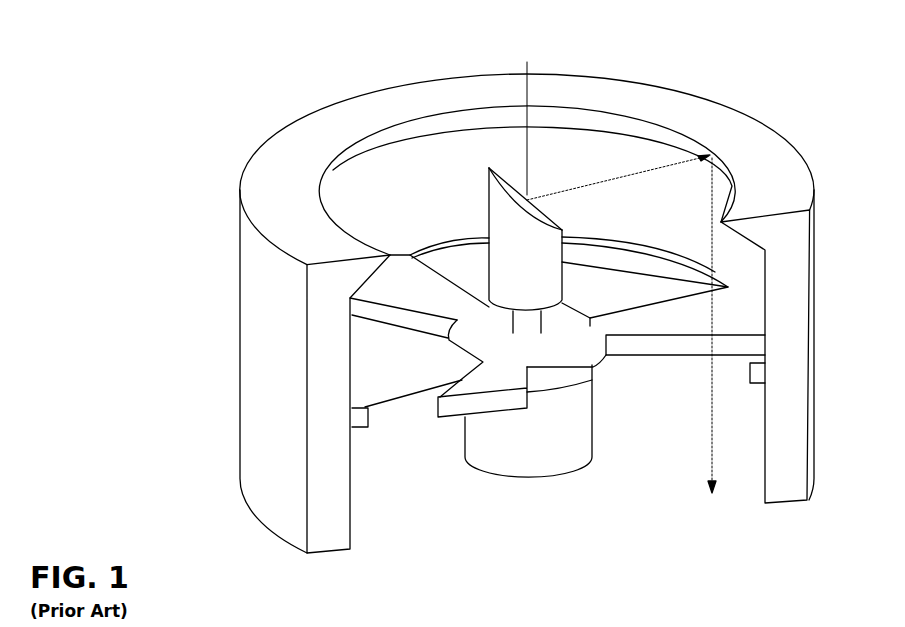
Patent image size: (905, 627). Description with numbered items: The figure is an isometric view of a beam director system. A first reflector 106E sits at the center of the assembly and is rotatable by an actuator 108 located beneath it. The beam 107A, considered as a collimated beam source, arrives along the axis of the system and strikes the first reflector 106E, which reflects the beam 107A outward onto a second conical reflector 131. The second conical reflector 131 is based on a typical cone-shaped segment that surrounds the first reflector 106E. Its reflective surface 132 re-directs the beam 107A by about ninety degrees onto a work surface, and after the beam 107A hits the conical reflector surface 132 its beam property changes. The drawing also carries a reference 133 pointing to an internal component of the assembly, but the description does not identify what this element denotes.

The second conical reflector 131 is at (303, 133).
The reflective surface 132 is at (423, 127).
The first reflector 106E is at (526, 200).
The beam 107A is at (529, 62).
The actuator 108 is at (527, 452).
The floor plate / stator base 133 is at (663, 337).